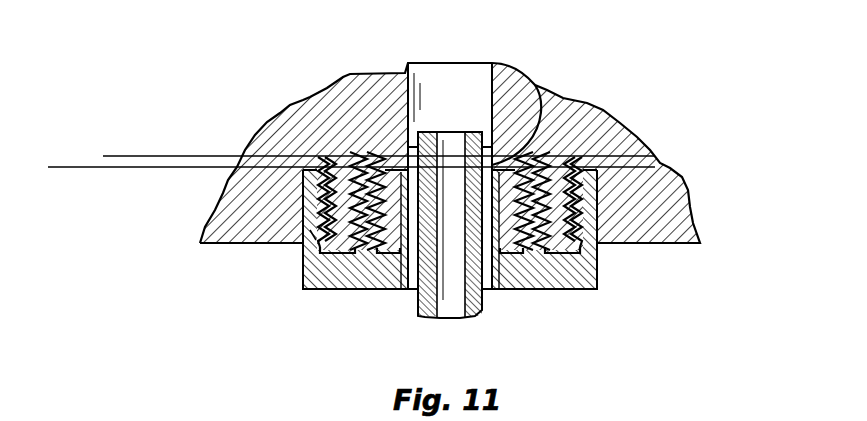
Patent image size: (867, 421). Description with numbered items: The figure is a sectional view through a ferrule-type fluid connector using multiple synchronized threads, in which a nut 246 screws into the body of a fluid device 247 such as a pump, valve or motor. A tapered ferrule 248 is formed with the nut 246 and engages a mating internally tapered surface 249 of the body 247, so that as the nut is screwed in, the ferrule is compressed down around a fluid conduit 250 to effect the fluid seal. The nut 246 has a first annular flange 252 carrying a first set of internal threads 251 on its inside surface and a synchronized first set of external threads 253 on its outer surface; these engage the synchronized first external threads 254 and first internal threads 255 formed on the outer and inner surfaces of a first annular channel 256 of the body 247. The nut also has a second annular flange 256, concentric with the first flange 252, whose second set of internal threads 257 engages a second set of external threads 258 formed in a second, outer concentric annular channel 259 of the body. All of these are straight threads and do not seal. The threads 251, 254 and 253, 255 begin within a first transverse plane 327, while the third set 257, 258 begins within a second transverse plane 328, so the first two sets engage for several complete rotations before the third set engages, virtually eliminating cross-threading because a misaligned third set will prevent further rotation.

The nut 246 is at (532, 277).
The body of fluid device 247 is at (597, 104).
The tapered ferrule 248 is at (526, 68).
The internally tapered surface 249 is at (432, 188).
The fluid conduit 250 is at (482, 308).
The first set of internal threads 251 is at (600, 214).
The first annular flange 252 is at (377, 175).
The first set of external threads 253 is at (655, 160).
The first external threads 254 is at (305, 170).
The first internal threads 255 is at (364, 210).
The first annular channel / second annular flange 256 is at (517, 153).
The second set of internal threads 257 is at (597, 198).
The second set of external threads 258 is at (317, 235).
The second annular channel 259 is at (332, 172).
The first transverse plane 327 is at (128, 156).
The second transverse plane 328 is at (88, 168).